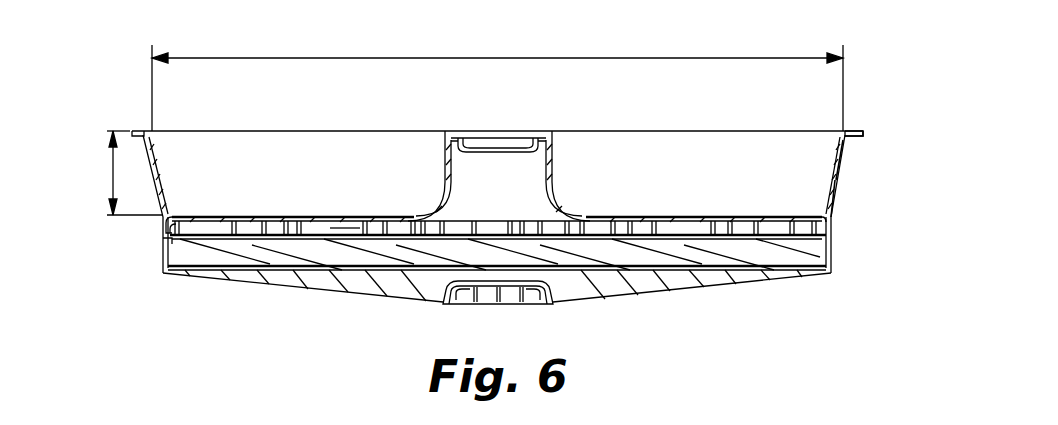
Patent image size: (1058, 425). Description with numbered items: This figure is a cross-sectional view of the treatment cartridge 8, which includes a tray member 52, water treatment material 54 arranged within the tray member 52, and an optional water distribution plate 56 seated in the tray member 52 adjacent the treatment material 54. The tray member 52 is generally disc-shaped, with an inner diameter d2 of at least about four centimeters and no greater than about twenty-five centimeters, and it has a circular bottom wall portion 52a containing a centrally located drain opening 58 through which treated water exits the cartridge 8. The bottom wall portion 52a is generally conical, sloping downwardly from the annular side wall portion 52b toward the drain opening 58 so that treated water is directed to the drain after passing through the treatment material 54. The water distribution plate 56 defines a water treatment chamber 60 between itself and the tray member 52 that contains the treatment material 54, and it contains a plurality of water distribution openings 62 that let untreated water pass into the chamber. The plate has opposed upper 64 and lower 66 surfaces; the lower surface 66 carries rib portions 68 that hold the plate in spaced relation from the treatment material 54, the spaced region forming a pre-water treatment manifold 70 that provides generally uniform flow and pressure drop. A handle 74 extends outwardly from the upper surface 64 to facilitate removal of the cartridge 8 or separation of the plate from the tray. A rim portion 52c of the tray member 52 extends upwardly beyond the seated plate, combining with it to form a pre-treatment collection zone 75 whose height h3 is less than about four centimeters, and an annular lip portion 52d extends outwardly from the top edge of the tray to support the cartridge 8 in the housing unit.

The treatment cartridge 8 is at (233, 48).
The inner diameter d2 is at (702, 54).
The height of collection zone h3 is at (105, 165).
The tray member 52 is at (213, 274).
The bottom wall portion 52a is at (777, 276).
The side wall portion 52b is at (836, 200).
The rim portion 52c is at (832, 165).
The annular lip portion 52d is at (857, 131).
The water treatment material 54 is at (367, 258).
The water distribution plate 56 is at (642, 215).
The drain opening 58 is at (507, 290).
The water treatment chamber 60 is at (793, 221).
The water distribution openings 62 is at (237, 217).
The upper surface 64 is at (200, 215).
The lower surface 66 is at (165, 239).
The rib portions 68 is at (288, 232).
The pre-water treatment manifold 70 is at (350, 228).
The handle 74 is at (515, 133).
The pre-treatment collection zone 75 is at (325, 141).